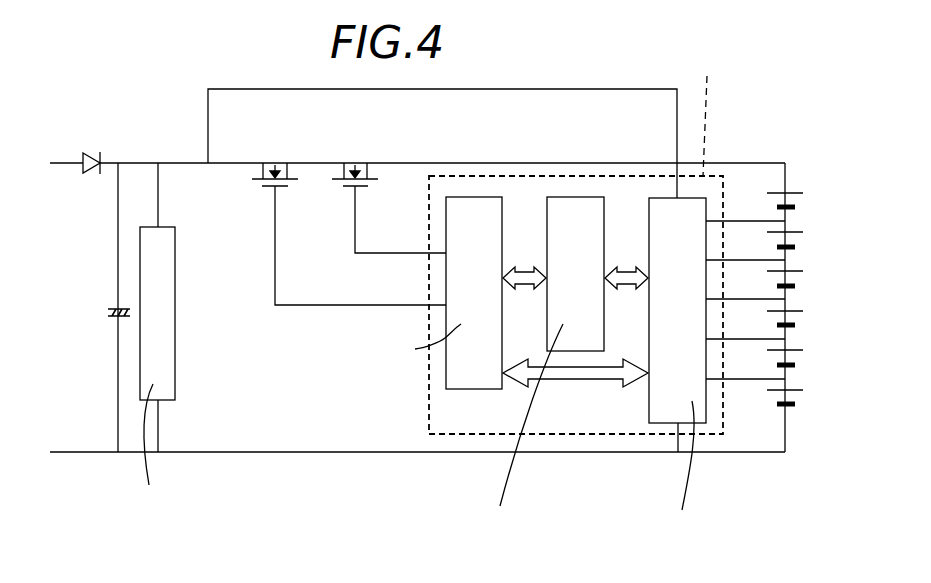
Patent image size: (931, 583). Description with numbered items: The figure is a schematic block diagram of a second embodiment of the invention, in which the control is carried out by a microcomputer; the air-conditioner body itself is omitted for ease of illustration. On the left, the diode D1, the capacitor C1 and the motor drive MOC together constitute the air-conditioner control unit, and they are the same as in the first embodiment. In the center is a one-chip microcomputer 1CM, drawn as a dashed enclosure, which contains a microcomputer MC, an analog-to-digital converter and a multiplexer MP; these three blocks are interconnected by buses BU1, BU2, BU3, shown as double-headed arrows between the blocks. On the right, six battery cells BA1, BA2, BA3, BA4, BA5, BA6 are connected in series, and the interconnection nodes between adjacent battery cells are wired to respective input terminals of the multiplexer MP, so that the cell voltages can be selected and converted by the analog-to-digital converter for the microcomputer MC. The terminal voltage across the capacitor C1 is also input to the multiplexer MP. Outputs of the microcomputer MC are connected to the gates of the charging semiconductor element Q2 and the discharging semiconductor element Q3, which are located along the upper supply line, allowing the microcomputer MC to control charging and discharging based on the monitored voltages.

The diode D1 is at (88, 166).
The capacitor C1 is at (112, 313).
The motor drive MOC is at (176, 401).
The discharging semiconductor element Q3 is at (272, 163).
The charging semiconductor element Q2 is at (356, 163).
The one-chip microcomputer 1CM is at (500, 176).
The microcomputer MC is at (480, 391).
The multiplexer MP is at (668, 424).
The bus BU1 is at (570, 378).
The bus BU2 is at (527, 285).
The bus BU3 is at (630, 285).
The battery cell BA1 is at (797, 204).
The battery cell BA2 is at (797, 244).
The battery cell BA3 is at (797, 283).
The battery cell BA4 is at (797, 322).
The battery cell BA5 is at (797, 362).
The battery cell BA6 is at (797, 401).